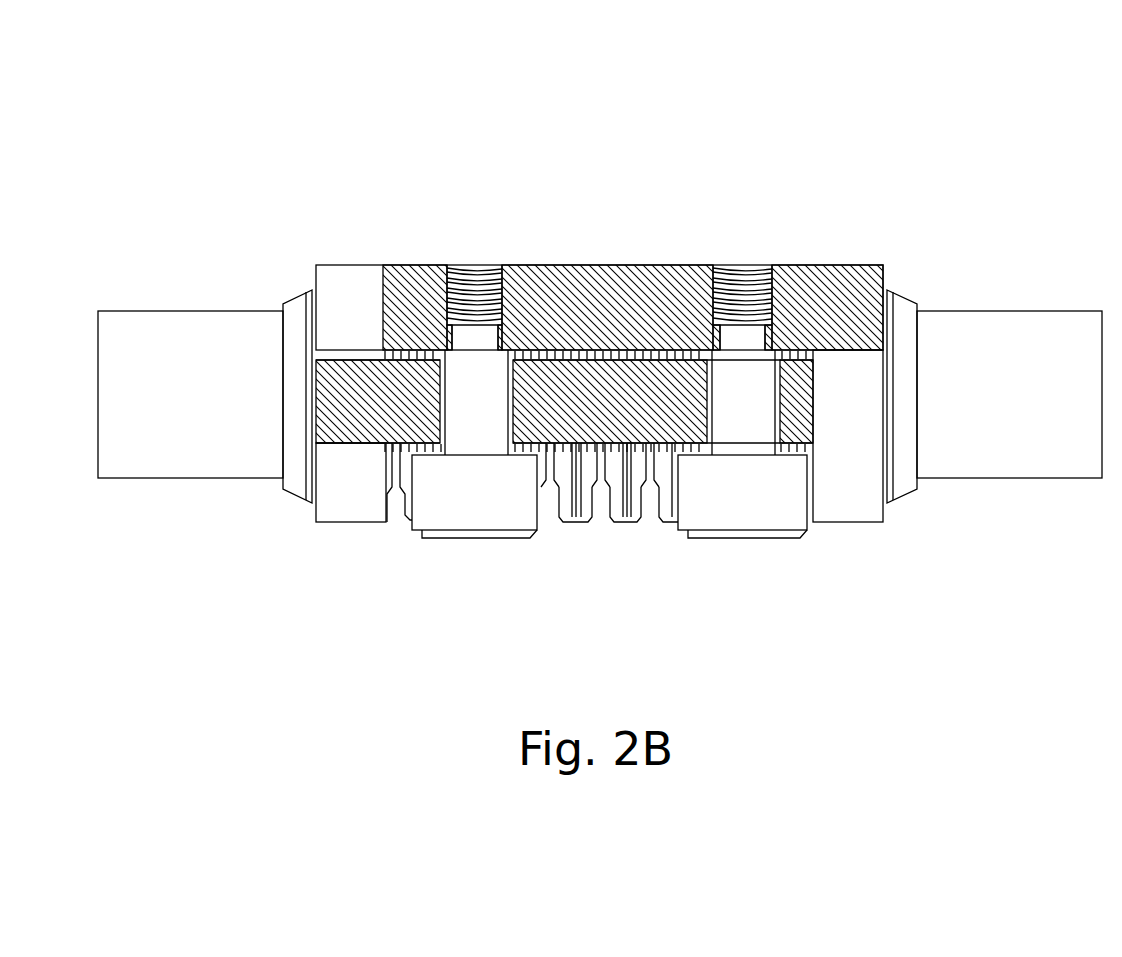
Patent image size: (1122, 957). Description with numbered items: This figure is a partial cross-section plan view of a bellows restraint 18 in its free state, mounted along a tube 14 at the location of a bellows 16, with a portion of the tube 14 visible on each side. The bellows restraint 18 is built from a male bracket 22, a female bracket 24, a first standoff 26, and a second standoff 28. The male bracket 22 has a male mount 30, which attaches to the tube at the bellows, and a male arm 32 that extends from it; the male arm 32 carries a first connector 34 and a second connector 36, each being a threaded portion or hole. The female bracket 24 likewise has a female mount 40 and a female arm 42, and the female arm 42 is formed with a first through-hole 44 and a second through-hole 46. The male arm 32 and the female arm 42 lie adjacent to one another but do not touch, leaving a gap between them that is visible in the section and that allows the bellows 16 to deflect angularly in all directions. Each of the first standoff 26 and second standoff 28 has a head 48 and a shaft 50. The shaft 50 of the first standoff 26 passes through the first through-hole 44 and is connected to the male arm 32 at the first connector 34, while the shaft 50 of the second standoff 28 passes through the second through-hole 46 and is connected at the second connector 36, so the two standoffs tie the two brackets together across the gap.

The tube 14 is at (195, 363).
The bellows 16 is at (625, 502).
The bellows restraint 18 is at (545, 170).
The male bracket 22 is at (648, 262).
The female bracket 24 is at (613, 413).
The first standoff 26 is at (432, 518).
The second standoff 28 is at (743, 505).
The male mount 30 is at (900, 330).
The male arm 32 is at (598, 283).
The first connector 34 is at (452, 327).
The second connector 36 is at (768, 313).
The female mount 40 is at (297, 437).
The female arm 42 is at (668, 410).
The first through-hole 44 is at (442, 405).
The second through-hole 46 is at (780, 412).
The head 48 is at (475, 500).
The shaft 50 is at (465, 415).